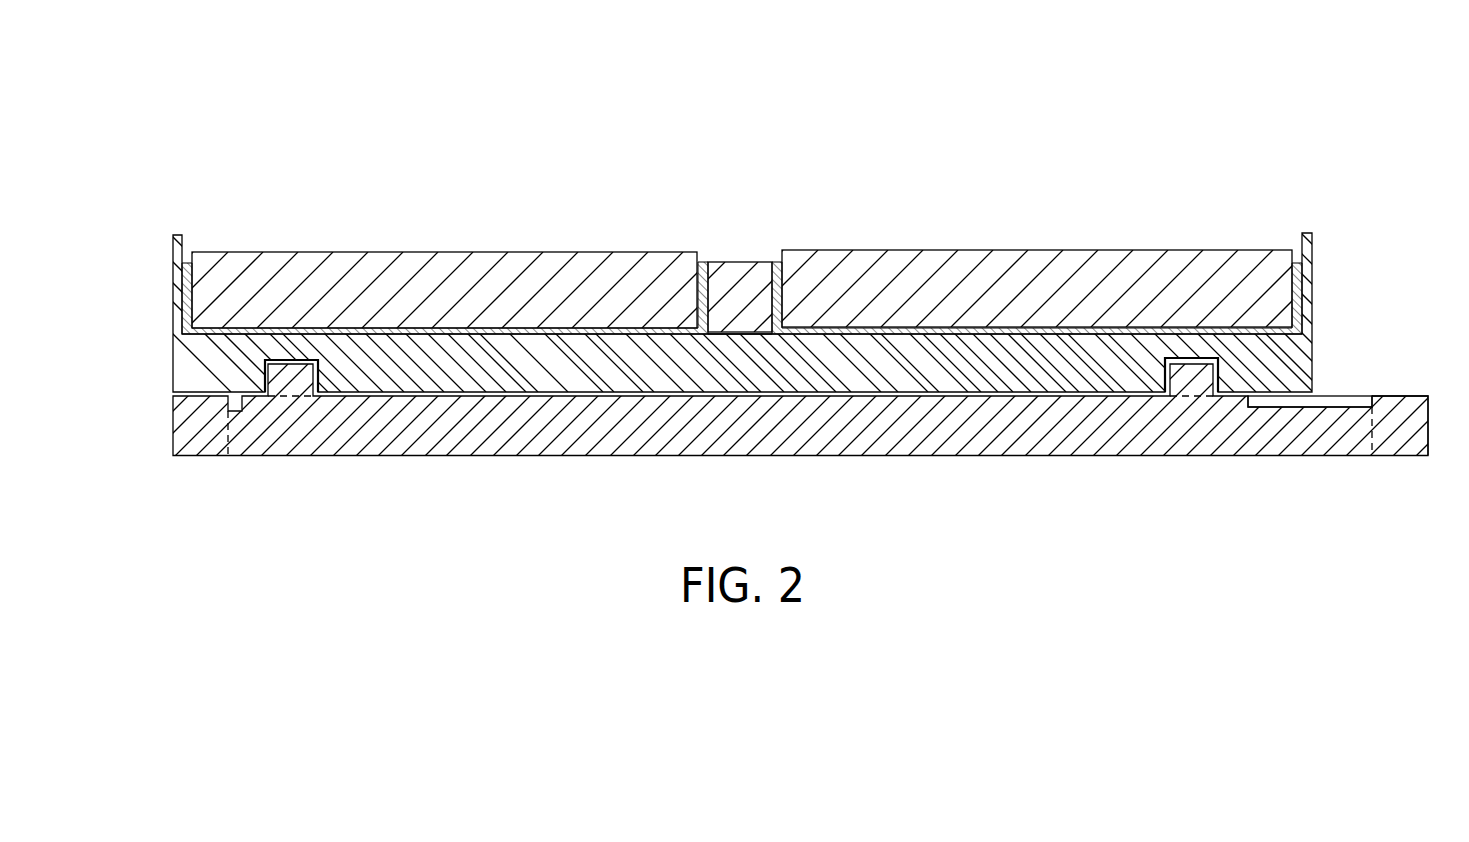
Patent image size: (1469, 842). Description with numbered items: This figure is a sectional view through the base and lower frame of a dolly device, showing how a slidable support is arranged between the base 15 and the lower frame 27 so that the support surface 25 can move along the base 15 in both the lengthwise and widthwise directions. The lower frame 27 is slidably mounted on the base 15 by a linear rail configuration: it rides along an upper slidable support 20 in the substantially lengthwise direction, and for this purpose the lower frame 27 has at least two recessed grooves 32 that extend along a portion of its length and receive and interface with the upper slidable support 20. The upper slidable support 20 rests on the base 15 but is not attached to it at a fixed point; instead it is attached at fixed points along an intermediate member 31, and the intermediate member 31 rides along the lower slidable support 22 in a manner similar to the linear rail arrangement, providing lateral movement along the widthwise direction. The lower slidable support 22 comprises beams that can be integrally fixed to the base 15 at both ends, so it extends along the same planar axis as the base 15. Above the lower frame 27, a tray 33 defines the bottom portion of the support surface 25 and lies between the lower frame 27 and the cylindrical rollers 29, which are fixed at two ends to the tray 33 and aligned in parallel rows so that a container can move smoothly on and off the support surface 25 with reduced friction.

The base 15 is at (1417, 394).
The upper slidable support 20 is at (293, 378).
The lower slidable support 22 is at (1372, 436).
The support surface 25 is at (510, 142).
The lower frame 27 is at (172, 323).
The cylindrical rollers 29 is at (1043, 250).
The intermediate member 31 is at (1278, 395).
The recessed grooves 32 is at (1213, 382).
The tray 33 is at (705, 260).